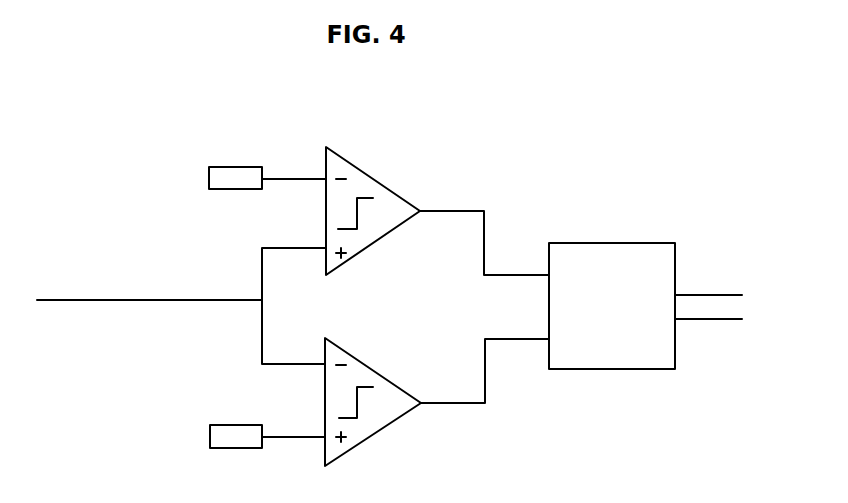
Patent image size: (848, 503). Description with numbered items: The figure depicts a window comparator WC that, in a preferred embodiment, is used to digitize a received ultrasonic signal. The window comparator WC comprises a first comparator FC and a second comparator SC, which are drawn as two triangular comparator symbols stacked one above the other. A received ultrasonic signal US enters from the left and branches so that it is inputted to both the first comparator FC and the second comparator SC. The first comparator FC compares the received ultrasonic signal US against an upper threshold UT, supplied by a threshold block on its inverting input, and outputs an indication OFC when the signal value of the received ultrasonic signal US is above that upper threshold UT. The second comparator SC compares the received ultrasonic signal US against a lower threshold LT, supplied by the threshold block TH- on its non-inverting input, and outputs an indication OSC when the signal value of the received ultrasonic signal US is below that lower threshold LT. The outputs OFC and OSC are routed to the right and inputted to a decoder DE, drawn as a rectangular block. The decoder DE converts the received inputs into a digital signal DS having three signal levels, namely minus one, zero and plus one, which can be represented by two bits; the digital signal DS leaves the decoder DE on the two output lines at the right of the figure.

The window comparator WC is at (165, 116).
The received ultrasonic signal US is at (120, 298).
The upper threshold UT is at (225, 189).
The lower threshold TH- is at (267, 436).
The lower threshold LT is at (222, 424).
The first comparator FC is at (370, 173).
The second comparator SC is at (362, 447).
The indication output by first comparator OFC is at (487, 236).
The indication output by second comparator OSC is at (486, 379).
The decoder DE is at (612, 306).
The digital signal DS is at (772, 296).